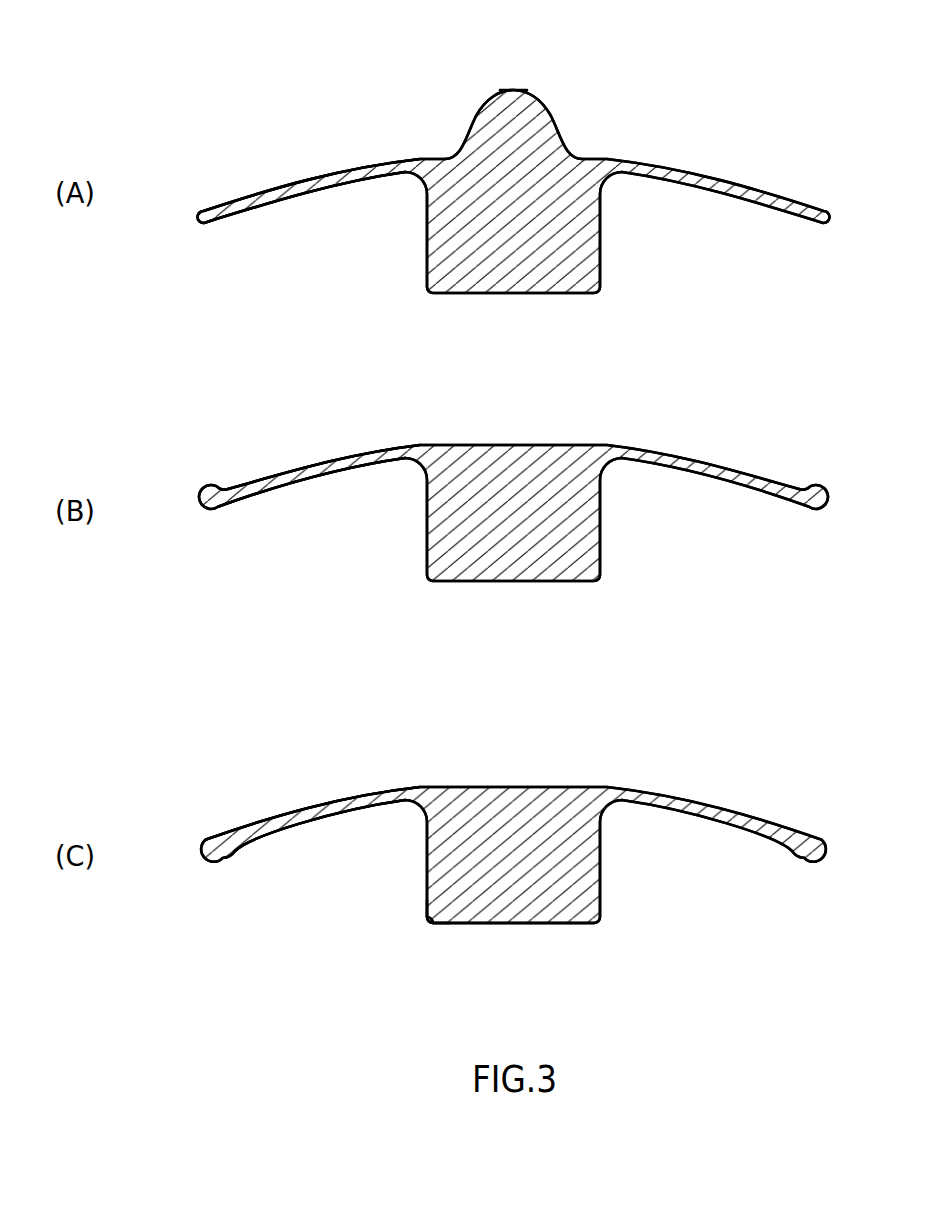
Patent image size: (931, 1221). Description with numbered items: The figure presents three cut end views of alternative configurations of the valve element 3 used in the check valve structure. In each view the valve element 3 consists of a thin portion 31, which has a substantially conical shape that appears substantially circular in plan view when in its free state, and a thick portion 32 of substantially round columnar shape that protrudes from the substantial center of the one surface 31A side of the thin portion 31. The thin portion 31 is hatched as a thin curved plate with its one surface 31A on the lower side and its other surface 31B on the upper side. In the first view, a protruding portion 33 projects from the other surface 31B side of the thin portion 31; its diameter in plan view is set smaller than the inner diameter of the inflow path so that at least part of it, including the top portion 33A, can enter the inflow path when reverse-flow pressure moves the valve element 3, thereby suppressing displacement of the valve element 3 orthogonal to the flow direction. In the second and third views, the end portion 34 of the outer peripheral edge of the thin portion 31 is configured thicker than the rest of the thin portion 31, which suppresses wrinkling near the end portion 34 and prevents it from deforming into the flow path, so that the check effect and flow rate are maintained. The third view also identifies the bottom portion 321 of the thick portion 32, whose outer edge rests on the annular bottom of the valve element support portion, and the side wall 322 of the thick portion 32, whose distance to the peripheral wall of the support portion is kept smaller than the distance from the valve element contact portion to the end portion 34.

The valve element 3 is at (682, 94).
The thin portion 31 is at (683, 176).
The one surface 31A is at (320, 196).
The other surface 31B is at (297, 180).
The thick portion 32 is at (585, 274).
The protruding portion 33 is at (520, 99).
The top portion 33A is at (504, 84).
The end portion 34 is at (220, 487).
The bottom portion 321 is at (527, 925).
The side wall 322 is at (426, 904).